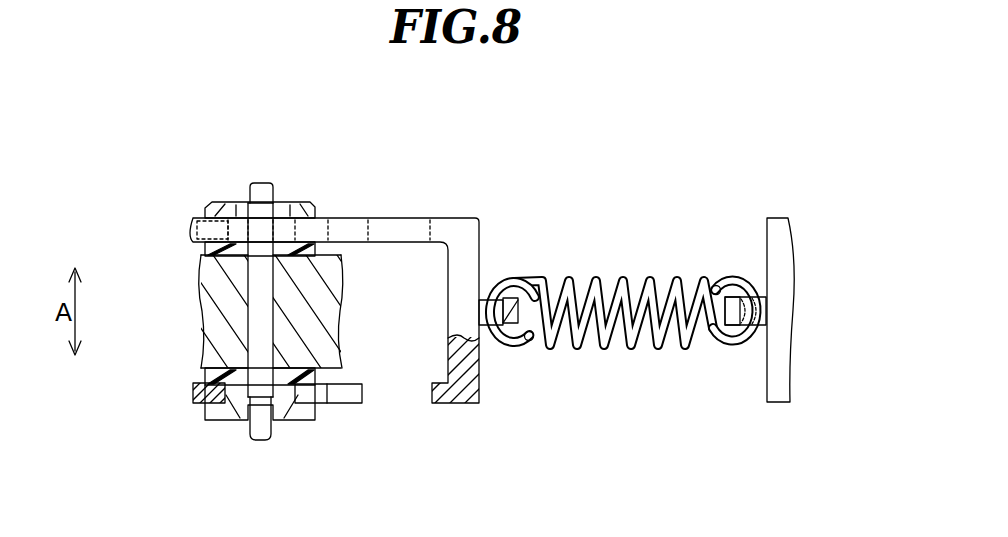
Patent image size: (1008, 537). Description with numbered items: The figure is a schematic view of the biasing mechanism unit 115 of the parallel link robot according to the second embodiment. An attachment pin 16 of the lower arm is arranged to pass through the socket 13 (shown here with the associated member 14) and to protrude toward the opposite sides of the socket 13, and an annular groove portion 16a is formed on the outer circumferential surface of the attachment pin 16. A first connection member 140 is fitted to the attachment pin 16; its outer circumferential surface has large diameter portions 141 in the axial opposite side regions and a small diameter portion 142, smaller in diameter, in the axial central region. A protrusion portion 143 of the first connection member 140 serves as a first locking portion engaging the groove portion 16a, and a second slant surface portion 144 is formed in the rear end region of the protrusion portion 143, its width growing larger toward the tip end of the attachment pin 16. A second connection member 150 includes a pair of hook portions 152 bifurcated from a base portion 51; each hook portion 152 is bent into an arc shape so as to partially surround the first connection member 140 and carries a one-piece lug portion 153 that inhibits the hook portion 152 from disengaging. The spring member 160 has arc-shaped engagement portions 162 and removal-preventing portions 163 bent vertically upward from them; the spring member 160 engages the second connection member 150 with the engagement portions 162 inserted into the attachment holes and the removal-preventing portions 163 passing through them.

The socket 13 is at (215, 312).
The plate member 14 is at (267, 311).
The attachment pin 16 is at (261, 188).
The annular groove portion 16a is at (283, 415).
The base portion 51 is at (481, 370).
The biasing mechanism unit 115 is at (642, 174).
The first connection member 140 is at (332, 195).
The large diameter portion 141 is at (207, 207).
The small diameter portion 142 is at (197, 228).
The protrusion portion 143 is at (283, 198).
The second slant surface portion 144 is at (252, 195).
The second connection member 150 is at (776, 215).
The hook portion 152 is at (412, 206).
The lug portion 153 is at (368, 218).
The spring member 160 is at (672, 250).
The engagement portion 162 is at (528, 274).
The removal-preventing portion 163 is at (720, 287).